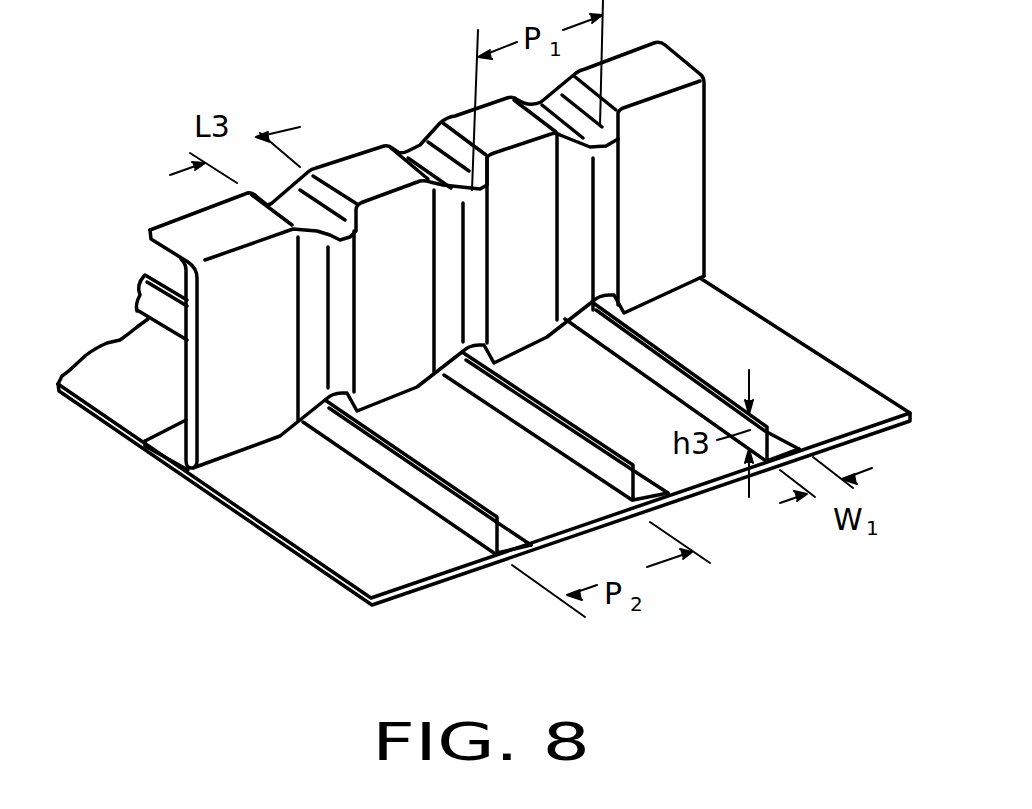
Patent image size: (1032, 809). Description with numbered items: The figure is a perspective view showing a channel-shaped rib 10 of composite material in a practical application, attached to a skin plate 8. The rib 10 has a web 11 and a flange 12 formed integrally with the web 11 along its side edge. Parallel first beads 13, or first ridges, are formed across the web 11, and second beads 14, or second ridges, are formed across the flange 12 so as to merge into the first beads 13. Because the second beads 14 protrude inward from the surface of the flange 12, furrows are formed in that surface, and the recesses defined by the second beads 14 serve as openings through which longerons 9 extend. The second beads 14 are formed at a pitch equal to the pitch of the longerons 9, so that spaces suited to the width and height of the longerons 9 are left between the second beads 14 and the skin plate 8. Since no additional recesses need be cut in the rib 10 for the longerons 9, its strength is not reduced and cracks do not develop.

The skin plate 8 is at (276, 547).
The longeron 9 is at (405, 468).
The rib 10 is at (714, 177).
The web 11 is at (528, 312).
The flange 12 is at (365, 158).
The first bead 13 is at (356, 287).
The second bead 14 is at (331, 222).